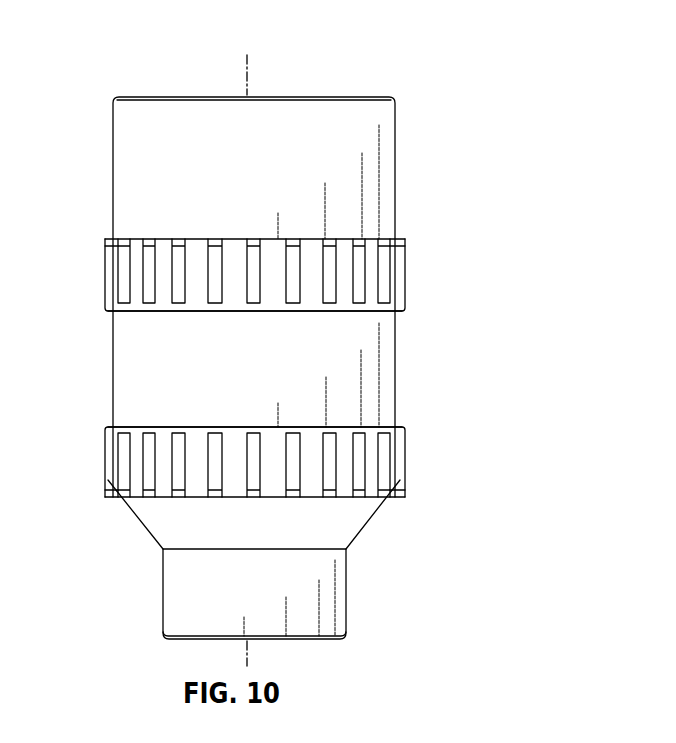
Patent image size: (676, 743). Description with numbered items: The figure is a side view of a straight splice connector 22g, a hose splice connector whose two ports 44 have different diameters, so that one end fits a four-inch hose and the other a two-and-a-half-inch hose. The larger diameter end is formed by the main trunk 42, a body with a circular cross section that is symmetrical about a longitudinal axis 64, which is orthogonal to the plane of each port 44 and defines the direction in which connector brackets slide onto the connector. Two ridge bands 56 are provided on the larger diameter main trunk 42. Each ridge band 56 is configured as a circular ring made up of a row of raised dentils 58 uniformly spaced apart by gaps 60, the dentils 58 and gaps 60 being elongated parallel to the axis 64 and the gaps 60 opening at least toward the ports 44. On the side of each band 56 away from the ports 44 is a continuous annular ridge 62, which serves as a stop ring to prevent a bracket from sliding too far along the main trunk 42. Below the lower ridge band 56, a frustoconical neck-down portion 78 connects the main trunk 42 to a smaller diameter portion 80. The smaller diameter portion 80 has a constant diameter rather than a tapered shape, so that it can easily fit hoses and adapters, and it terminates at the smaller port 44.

The straight splice connector 22g is at (433, 45).
The main trunk 42 is at (387, 360).
The port 44 is at (327, 97).
The longitudinal axis 64 is at (247, 76).
The ridge band 56 is at (151, 274).
The dentil 58 is at (277, 300).
The gap 60 is at (217, 252).
The continuous annular ridge 62 is at (128, 313).
The frustoconical neck-down portion 78 is at (365, 518).
The smaller diameter portion 80 is at (177, 597).